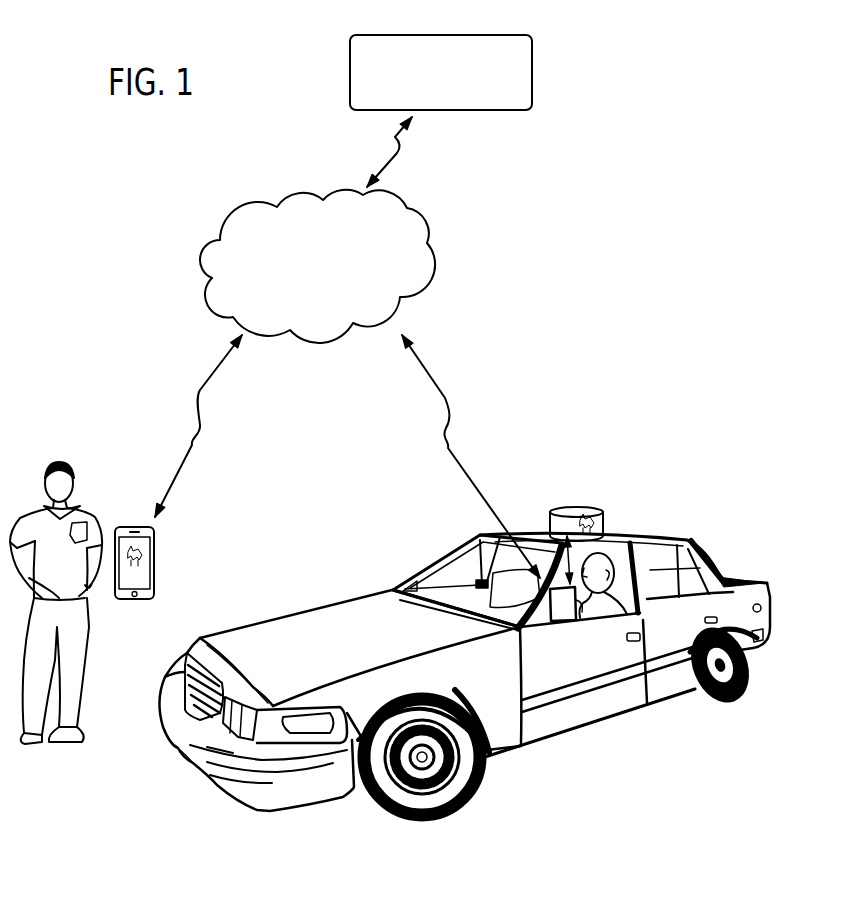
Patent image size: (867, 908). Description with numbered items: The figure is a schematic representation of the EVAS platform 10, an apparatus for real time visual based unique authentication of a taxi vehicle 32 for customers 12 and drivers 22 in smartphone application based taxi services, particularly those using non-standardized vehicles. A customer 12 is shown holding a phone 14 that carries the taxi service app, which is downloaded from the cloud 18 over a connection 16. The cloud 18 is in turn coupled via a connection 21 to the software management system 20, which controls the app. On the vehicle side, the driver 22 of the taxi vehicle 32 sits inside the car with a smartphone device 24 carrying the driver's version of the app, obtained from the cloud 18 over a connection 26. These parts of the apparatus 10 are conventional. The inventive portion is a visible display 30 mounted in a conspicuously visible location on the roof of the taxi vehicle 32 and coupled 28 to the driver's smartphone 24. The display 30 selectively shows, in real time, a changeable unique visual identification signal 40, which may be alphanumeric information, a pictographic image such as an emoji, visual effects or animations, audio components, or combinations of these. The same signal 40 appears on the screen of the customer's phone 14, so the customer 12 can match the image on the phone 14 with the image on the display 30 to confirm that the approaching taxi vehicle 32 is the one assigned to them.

The EVAS platform 10 is at (123, 193).
The customer 12 is at (71, 577).
The phone 14 is at (127, 527).
The connection 16 is at (202, 392).
The cloud 18 is at (315, 282).
The software management system 20 is at (418, 77).
The connection 21 is at (386, 165).
The driver 22 is at (618, 617).
The smartphone device 24 is at (555, 620).
The connection 26 is at (445, 392).
The coupling 28 is at (560, 545).
The visible display 30 is at (570, 506).
The taxi vehicle 32 is at (371, 642).
The unique visual identification signal 40 is at (145, 553).